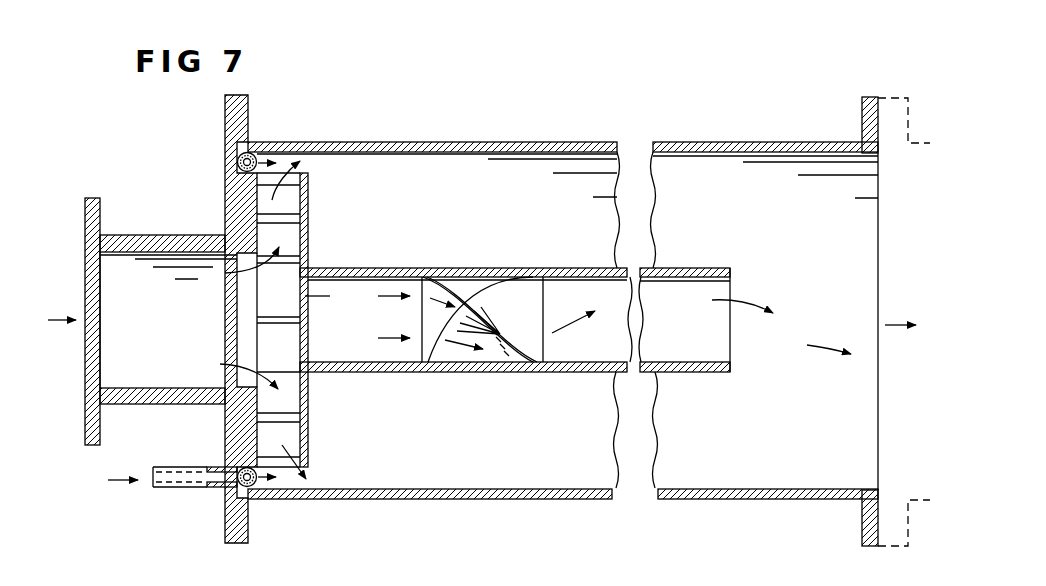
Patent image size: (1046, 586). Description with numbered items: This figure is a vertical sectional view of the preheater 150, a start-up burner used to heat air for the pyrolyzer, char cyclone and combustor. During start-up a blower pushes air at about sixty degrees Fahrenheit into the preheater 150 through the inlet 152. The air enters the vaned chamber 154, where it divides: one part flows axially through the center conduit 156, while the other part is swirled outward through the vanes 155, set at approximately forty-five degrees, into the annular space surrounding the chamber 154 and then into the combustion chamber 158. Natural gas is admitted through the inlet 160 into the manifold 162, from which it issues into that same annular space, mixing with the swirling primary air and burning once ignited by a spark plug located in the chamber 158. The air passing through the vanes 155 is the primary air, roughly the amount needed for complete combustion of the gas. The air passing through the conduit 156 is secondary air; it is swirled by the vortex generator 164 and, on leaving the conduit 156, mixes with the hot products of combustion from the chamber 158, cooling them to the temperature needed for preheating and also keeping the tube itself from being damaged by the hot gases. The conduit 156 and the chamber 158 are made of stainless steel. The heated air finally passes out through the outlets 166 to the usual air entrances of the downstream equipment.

The preheater 150 is at (537, 128).
The inlet 152 is at (89, 262).
The vaned chamber 154 is at (308, 192).
The vanes 155 is at (282, 225).
The center conduit 156 is at (345, 283).
The combustion chamber 158 is at (499, 238).
The inlet 160 is at (153, 478).
The manifold 162 is at (251, 155).
The vortex generator 164 is at (497, 354).
The outlets 166 is at (878, 291).